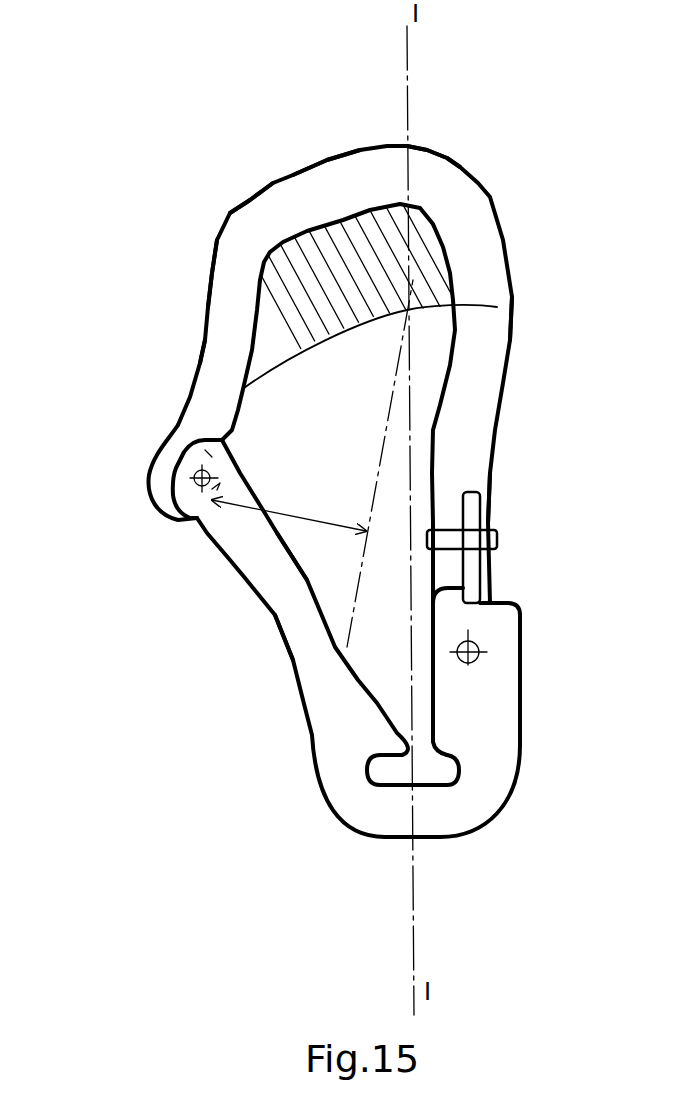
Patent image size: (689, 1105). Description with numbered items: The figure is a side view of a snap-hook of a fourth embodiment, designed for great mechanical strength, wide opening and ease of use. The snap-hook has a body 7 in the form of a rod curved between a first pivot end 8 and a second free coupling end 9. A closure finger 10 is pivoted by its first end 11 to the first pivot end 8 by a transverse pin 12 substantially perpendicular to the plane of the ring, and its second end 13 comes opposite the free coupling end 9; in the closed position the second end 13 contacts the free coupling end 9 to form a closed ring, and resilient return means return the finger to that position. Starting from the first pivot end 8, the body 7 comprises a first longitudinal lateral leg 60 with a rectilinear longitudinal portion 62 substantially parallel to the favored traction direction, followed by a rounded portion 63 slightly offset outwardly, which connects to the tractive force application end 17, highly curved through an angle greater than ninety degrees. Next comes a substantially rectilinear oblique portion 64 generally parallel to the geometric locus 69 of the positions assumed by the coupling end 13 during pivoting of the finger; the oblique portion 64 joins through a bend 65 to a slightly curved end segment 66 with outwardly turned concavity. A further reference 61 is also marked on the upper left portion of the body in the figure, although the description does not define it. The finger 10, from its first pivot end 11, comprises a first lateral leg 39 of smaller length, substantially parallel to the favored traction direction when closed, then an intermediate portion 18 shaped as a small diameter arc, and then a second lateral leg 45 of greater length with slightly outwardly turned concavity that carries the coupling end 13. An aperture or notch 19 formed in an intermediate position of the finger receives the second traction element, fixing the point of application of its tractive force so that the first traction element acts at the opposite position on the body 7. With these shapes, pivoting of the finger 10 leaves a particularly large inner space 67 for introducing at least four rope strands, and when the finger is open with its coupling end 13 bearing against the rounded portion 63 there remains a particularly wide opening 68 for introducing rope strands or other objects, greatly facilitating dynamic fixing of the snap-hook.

The body 7 is at (507, 227).
The first pivot end 8 is at (493, 566).
The second free coupling end 9 is at (157, 480).
The closure finger 10 is at (303, 713).
The first end of the finger 11 is at (493, 705).
The transverse pin 12 is at (483, 642).
The second end of the finger 13 is at (207, 517).
The tractive force application end 17 is at (420, 205).
The intermediate portion 18 is at (358, 812).
The aperture or notch 19 is at (438, 767).
The first lateral leg 39 is at (490, 743).
The second lateral leg 45 is at (292, 642).
The first longitudinal lateral leg 60 is at (470, 417).
The hook upper left portion 61 is at (272, 222).
The rectilinear longitudinal portion 62 is at (470, 472).
The rounded portion 63 is at (487, 333).
The oblique portion 64 is at (327, 203).
The bend 65 is at (233, 247).
The end segment 66 is at (217, 358).
The inner space 67 is at (420, 250).
The opening 68 is at (285, 514).
The geometric locus 69 is at (300, 350).